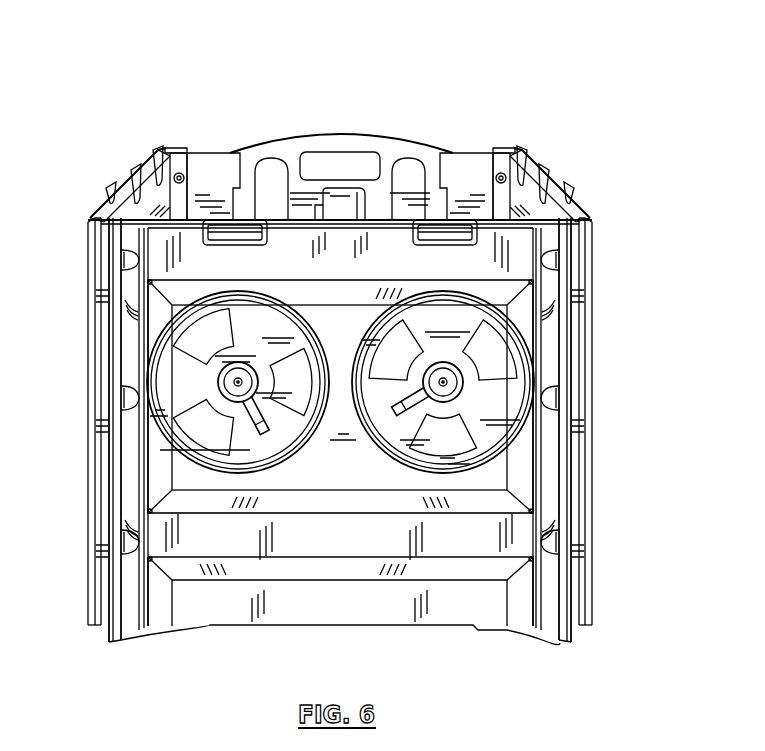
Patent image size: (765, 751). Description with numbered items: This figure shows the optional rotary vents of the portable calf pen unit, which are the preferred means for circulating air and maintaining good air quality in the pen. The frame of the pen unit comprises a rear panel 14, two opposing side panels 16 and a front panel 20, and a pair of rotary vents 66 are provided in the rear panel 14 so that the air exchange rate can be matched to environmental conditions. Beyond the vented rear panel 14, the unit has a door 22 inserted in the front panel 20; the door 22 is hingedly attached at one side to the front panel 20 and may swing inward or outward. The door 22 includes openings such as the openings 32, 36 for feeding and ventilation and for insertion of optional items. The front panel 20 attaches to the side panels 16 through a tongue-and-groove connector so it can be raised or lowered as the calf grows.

The rear panel 14 is at (340, 396).
The side panels 16 is at (115, 198).
The front panel 20 is at (208, 170).
The door 22 is at (345, 145).
The opening 32 is at (412, 172).
The opening 36 is at (272, 168).
The rotary vents 66 is at (176, 362).